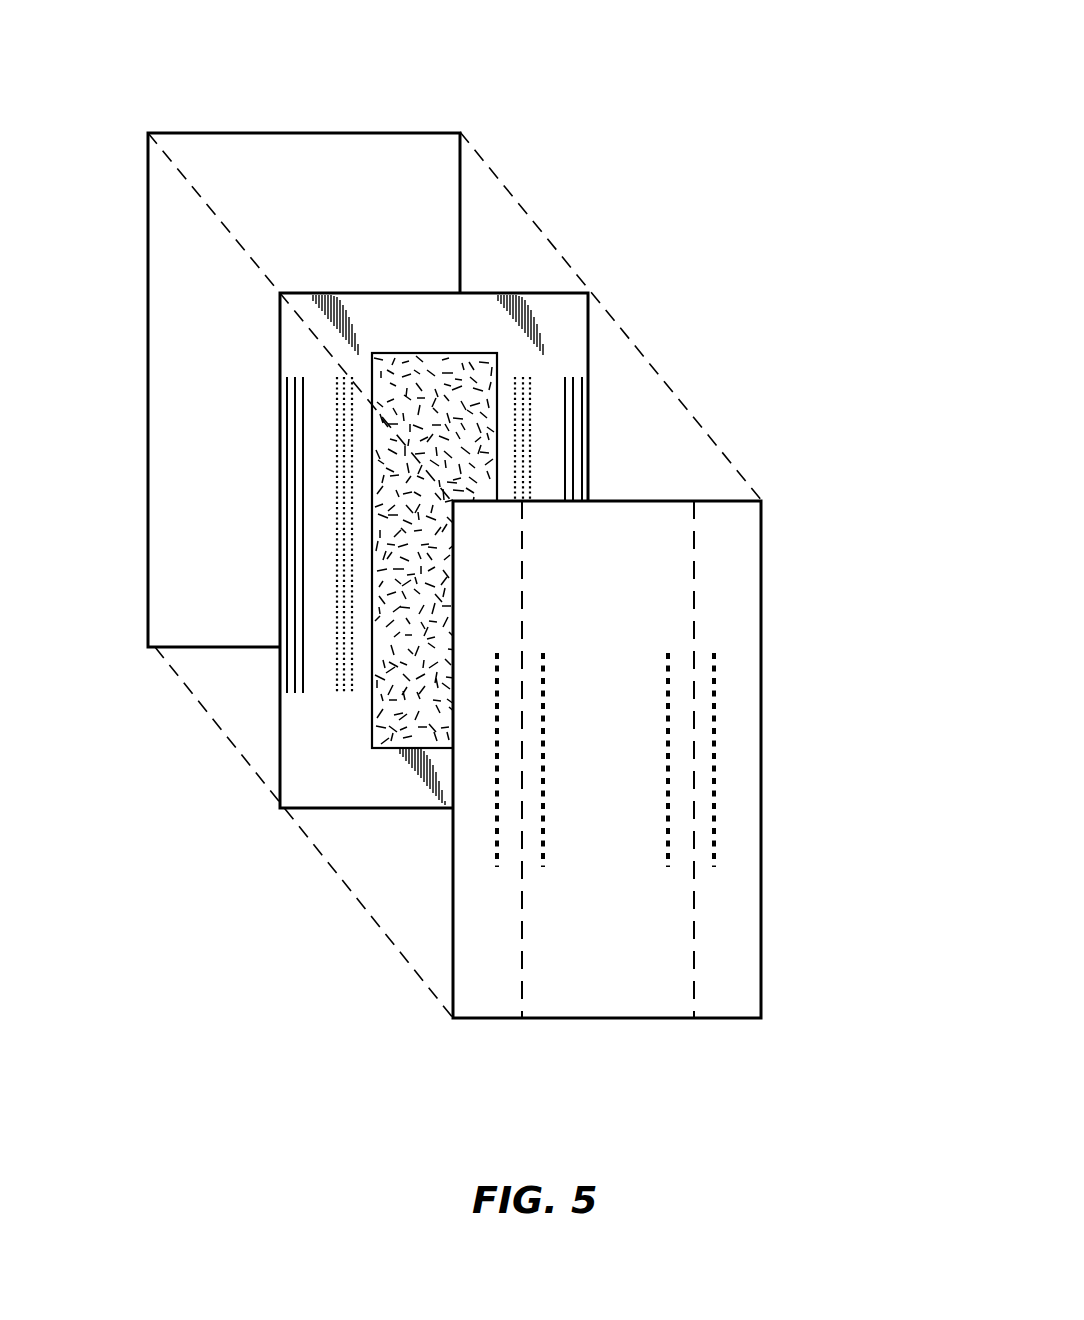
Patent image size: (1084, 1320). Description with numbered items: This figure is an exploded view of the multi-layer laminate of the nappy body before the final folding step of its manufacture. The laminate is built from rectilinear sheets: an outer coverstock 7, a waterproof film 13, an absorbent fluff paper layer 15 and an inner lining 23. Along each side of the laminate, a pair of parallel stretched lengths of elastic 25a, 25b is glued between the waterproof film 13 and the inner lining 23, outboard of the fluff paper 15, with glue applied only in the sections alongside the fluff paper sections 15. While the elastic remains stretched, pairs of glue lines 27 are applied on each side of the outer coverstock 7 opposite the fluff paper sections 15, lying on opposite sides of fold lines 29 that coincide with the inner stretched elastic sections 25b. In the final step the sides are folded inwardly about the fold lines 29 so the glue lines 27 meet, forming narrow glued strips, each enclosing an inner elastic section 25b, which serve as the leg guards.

The outer coverstock 7 is at (329, 150).
The waterproof film 13 is at (477, 313).
The absorbent fluff paper layer 15 is at (469, 427).
The inner lining 23 is at (744, 681).
The stretched length of elastic 25a is at (297, 663).
The inner stretched elastic section 25b is at (340, 677).
The glue lines 27 is at (543, 822).
The fold lines 29 is at (522, 980).